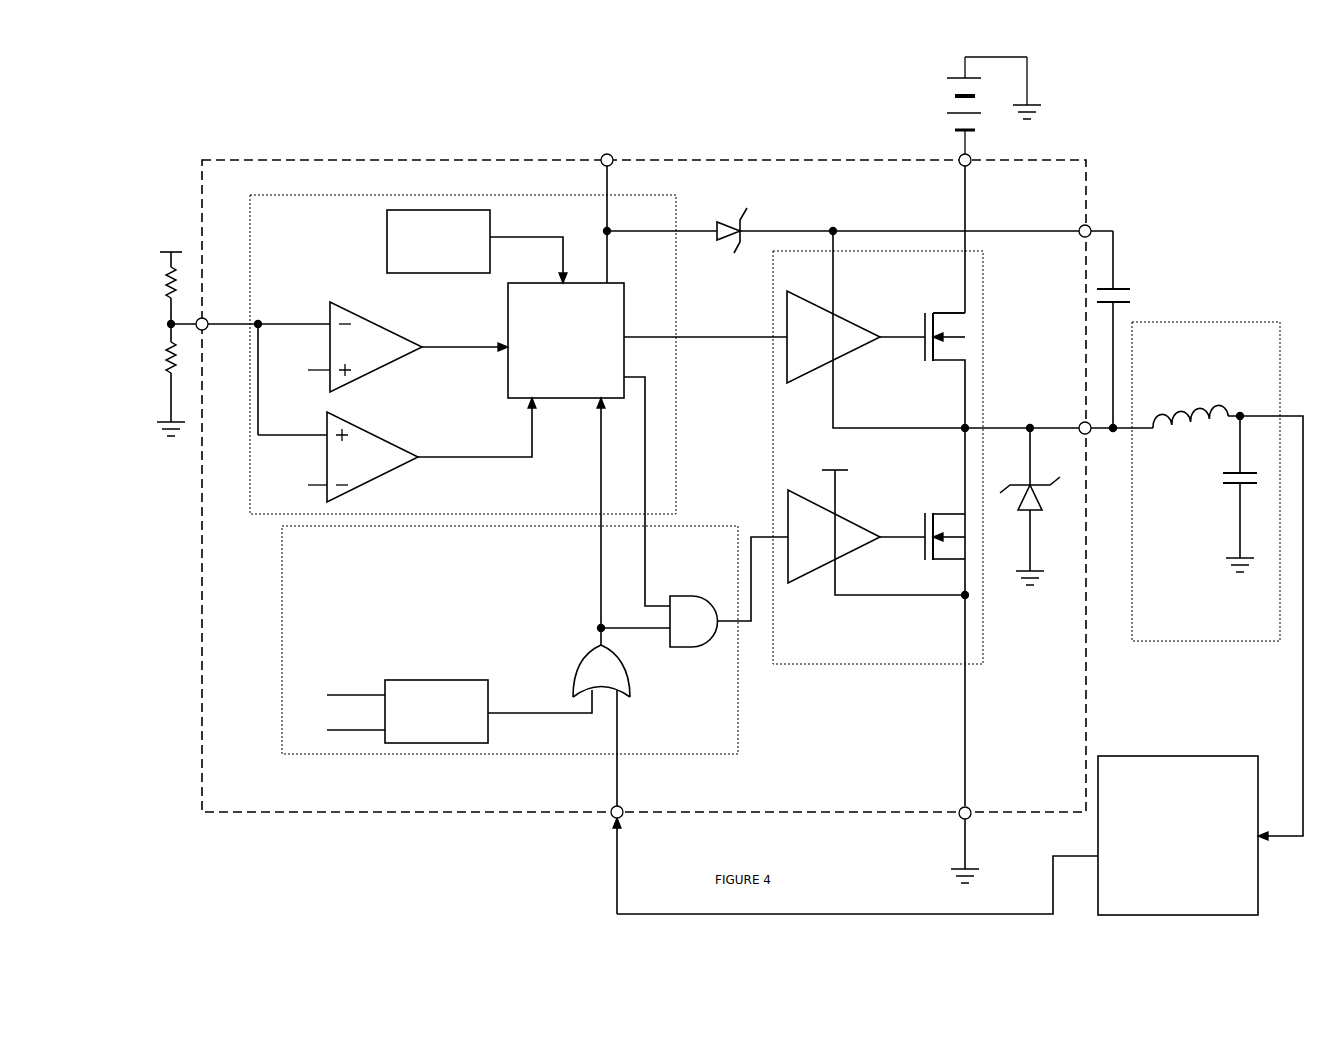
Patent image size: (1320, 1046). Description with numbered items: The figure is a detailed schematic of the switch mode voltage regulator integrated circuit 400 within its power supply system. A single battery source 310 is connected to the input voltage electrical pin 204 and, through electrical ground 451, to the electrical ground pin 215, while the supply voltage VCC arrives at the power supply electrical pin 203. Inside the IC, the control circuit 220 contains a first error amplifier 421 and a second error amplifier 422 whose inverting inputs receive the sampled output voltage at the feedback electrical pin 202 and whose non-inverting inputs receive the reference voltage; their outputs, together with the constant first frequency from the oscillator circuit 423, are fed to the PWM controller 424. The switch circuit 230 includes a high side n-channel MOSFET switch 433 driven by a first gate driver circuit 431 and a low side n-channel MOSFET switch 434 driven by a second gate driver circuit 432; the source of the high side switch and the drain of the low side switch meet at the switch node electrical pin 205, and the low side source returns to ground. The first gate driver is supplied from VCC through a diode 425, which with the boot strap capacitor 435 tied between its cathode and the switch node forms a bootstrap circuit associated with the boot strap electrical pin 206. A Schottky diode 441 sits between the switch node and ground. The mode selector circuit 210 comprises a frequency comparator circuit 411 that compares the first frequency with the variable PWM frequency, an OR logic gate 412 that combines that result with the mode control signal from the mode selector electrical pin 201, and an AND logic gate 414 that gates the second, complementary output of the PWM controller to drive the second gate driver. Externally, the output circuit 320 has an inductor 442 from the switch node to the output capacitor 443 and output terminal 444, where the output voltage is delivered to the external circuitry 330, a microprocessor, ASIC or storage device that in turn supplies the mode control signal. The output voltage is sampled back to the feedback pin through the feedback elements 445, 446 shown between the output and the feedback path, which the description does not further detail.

The switch mode voltage regulator integrated circuit 400 is at (775, 136).
The single battery source 310 is at (947, 78).
The electrical ground 451 is at (1040, 105).
The power supply electrical pin (VCC) 203 is at (610, 154).
The input voltage electrical pin (VIN) 204 is at (960, 163).
The boot strap electrical pin (BS) 206 is at (1082, 237).
The switch node electrical pin (SW) 205 is at (1112, 433).
The feedback electrical pin (FB) 202 is at (208, 331).
The mode selector electrical pin (MODE) 201 is at (611, 824).
The electrical ground pin (GND) 215 is at (959, 806).
The control circuit 220 is at (463, 354).
The oscillator circuit 423 is at (477, 246).
The pulse width modulation (PWM) controller 424 is at (647, 417).
The first error amplifier 421 is at (376, 321).
The second error amplifier 422 is at (360, 418).
The diode 425 is at (712, 243).
The first gate driver circuit 431 is at (867, 323).
The high side n-channel MOSFET switch 433 is at (940, 362).
The second gate driver circuit 432 is at (866, 518).
The low side n-channel MOSFET switch 434 is at (944, 558).
The boot strap capacitor 435 is at (1117, 289).
The switch circuit 230 is at (878, 457).
The Schottky diode 441 is at (1041, 500).
The output circuit 320 is at (1206, 481).
The inductor 442 is at (1194, 422).
The output capacitor 443 is at (1228, 485).
The output terminal 444 is at (1240, 412).
The feedback resistor 445 is at (161, 272).
The feedback resistor 446 is at (161, 350).
The mode selector circuit 210 is at (510, 640).
The frequency comparator circuit 411 is at (437, 681).
The OR logic gate 412 is at (582, 660).
The AND logic gate 414 is at (680, 592).
The external circuitry 330 is at (1178, 835).